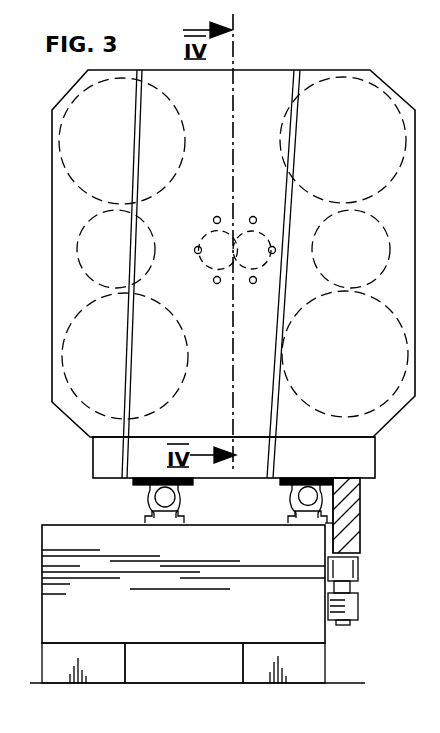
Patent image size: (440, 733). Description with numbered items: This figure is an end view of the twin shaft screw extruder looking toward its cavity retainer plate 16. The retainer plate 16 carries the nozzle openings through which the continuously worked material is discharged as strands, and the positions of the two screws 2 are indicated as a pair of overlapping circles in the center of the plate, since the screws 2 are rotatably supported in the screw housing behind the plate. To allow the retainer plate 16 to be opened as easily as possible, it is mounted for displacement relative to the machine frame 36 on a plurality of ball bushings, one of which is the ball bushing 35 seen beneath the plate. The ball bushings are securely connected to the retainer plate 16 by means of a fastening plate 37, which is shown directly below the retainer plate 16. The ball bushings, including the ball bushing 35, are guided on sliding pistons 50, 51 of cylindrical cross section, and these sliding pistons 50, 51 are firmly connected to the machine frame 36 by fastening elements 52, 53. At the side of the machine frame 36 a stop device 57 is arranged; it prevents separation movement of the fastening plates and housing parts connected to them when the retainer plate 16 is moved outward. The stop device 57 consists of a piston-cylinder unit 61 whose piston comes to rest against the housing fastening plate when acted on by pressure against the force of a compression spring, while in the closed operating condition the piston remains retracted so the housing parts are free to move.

The screw 2 is at (208, 246).
The cavity retainer plate 16 is at (96, 425).
The ball bushing 35 is at (211, 502).
The machine frame 36 is at (308, 628).
The fastening plate 37 is at (93, 470).
The sliding piston 50 is at (138, 494).
The sliding piston 51 is at (342, 495).
The fastening element 52 is at (152, 514).
The fastening element 53 is at (330, 520).
The stop device 57 is at (372, 542).
The piston-cylinder unit 61 is at (358, 566).